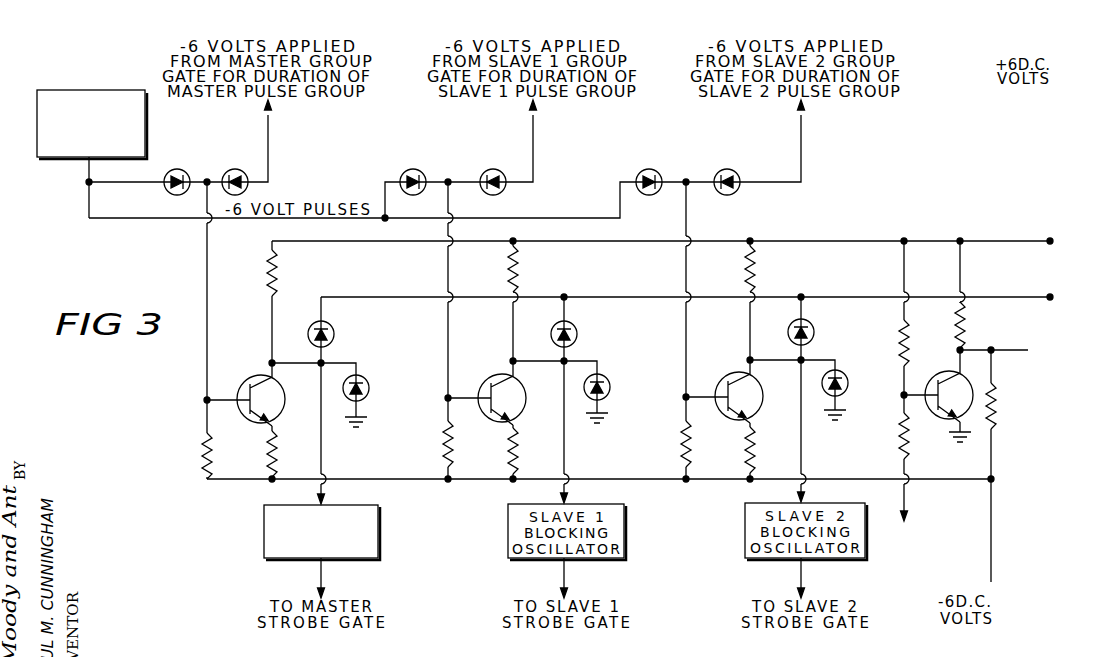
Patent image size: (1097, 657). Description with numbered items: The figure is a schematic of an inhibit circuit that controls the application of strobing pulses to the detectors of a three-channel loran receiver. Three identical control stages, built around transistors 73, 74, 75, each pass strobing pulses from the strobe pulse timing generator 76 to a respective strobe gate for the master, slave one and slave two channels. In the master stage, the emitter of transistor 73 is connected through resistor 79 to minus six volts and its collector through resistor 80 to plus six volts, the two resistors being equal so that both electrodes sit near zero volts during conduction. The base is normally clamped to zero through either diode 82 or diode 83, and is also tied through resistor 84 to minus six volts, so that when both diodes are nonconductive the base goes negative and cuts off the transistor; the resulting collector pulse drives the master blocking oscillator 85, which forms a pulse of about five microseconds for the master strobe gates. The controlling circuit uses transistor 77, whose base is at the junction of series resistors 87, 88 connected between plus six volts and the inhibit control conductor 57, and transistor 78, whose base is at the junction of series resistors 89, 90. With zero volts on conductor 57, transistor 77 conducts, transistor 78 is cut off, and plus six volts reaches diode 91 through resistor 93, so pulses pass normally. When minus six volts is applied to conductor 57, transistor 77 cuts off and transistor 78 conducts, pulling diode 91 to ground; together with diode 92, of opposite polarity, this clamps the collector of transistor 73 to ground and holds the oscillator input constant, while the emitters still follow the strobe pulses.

The strobe pulse timing generator 76 is at (82, 88).
The diode 82 is at (196, 168).
The diode 83 is at (251, 168).
The resistor 80 is at (279, 268).
The diode 91 is at (335, 334).
The diode 92 is at (366, 385).
The transistor 73 is at (254, 380).
The resistor 84 is at (213, 448).
The resistor 79 is at (278, 448).
The master blocking oscillator 85 is at (378, 506).
The transistor 74 is at (496, 376).
The transistor 75 is at (733, 375).
The resistor 93 is at (1057, 262).
The resistor 89 is at (955, 326).
The transistor 78 is at (1019, 331).
The resistor 87 is at (898, 353).
The transistor 77 is at (956, 372).
The resistor 90 is at (995, 348).
The resistor 88 is at (899, 449).
The conductor 57 is at (907, 497).